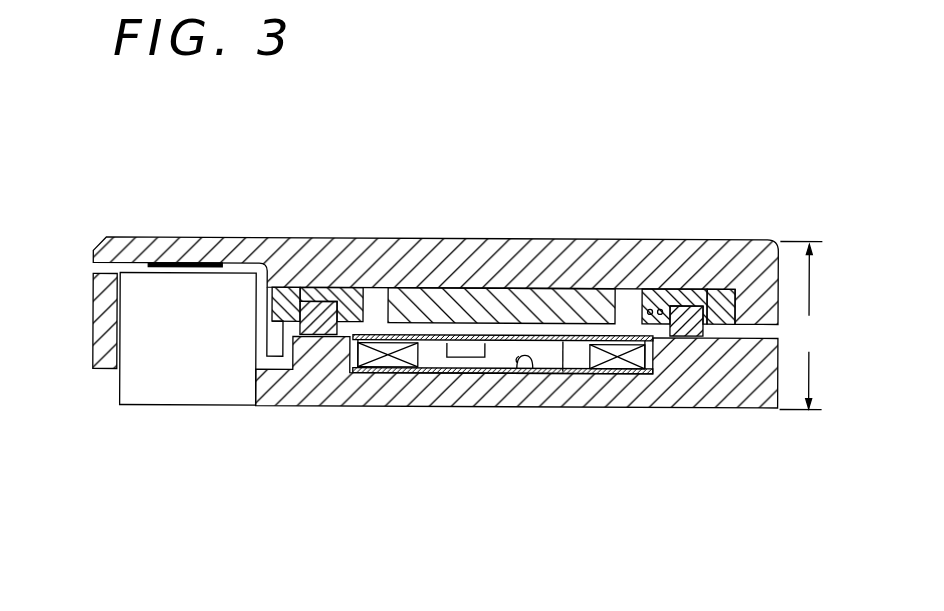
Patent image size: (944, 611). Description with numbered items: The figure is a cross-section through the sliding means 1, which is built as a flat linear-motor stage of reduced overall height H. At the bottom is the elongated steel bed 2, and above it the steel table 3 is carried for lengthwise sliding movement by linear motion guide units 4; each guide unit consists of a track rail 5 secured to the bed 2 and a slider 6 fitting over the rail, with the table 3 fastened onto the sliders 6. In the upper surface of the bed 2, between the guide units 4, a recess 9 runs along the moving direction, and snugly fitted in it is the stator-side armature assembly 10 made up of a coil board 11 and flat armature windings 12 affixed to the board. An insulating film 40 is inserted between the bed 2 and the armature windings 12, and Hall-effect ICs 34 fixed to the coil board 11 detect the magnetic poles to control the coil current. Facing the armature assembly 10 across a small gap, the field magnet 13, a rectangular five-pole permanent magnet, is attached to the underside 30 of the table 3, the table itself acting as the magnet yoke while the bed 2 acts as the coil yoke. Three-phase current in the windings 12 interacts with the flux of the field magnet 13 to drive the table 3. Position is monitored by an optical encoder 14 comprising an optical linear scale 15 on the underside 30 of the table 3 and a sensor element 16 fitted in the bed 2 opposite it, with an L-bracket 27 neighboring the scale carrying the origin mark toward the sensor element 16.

The sliding means 1 is at (430, 213).
The bed 2 is at (497, 388).
The table 3 is at (307, 253).
The linear motion guide unit 4 is at (287, 287).
The track rail 5 is at (320, 312).
The slider 6 is at (350, 308).
The recess 9 is at (533, 361).
The armature assembly 10 is at (577, 350).
The coil board 11 is at (563, 371).
The armature winding 12 is at (630, 373).
The field magnet 13 is at (488, 302).
The optical encoder 14 is at (92, 267).
The optical linear scale 15 is at (185, 263).
The sensor element 16 is at (187, 372).
The L-bracket 27 is at (274, 348).
The underside 30 is at (626, 296).
The Hall-effect IC 34 is at (464, 352).
The insulating film 40 is at (430, 373).
The height H is at (801, 325).